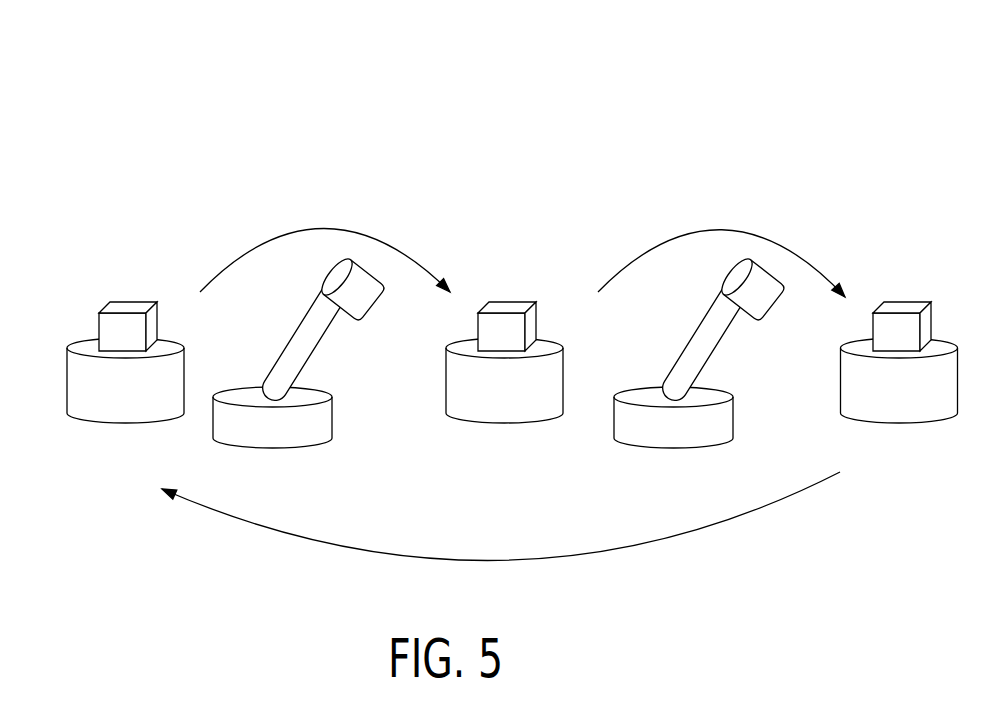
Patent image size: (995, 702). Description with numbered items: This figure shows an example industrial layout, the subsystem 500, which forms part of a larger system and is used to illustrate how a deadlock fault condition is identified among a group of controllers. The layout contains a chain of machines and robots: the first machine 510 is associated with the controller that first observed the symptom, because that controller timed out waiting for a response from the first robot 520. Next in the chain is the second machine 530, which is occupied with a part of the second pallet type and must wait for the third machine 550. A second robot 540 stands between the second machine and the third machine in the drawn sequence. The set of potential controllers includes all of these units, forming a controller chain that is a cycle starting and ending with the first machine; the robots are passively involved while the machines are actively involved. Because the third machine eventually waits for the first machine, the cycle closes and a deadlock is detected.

The subsystem 500 is at (490, 103).
The machine 510 is at (78, 340).
The robot 520 is at (272, 447).
The machine 530 is at (555, 342).
The second robot R2 540 is at (673, 447).
The machine 550 is at (863, 340).